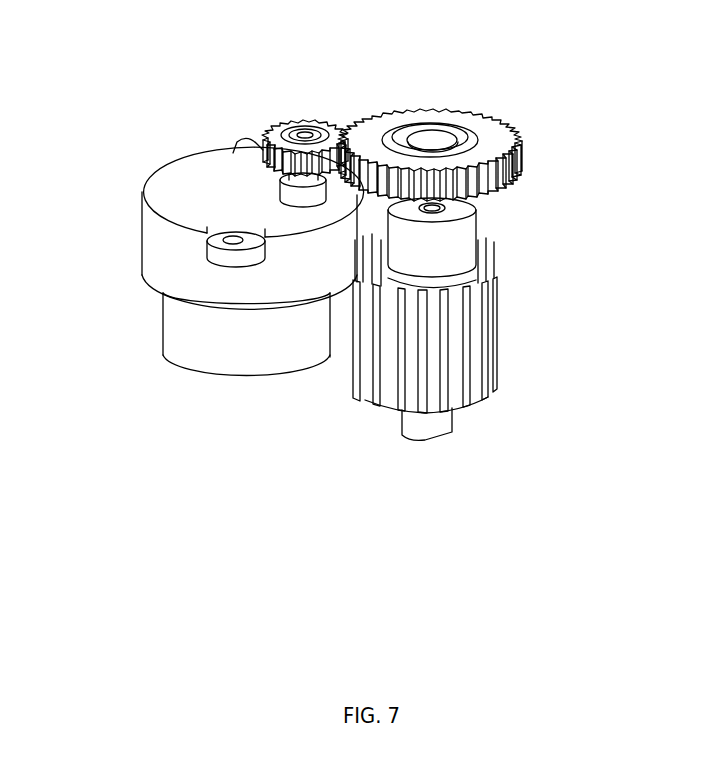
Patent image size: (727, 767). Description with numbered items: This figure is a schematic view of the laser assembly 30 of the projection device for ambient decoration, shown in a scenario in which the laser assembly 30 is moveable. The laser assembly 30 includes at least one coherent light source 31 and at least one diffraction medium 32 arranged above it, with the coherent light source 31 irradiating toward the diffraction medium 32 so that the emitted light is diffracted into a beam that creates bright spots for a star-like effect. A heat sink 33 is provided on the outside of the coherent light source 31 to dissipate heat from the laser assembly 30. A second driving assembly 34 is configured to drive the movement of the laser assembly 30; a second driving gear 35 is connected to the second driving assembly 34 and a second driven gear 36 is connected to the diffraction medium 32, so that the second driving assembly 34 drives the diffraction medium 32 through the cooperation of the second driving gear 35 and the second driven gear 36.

The laser assembly 30 is at (113, 48).
The coherent light source 31 is at (450, 240).
The diffraction medium 32 is at (445, 122).
The heat sink 33 is at (497, 340).
The second driving assembly 34 is at (180, 178).
The second driving gear 35 is at (283, 117).
The second driven gear 36 is at (490, 162).